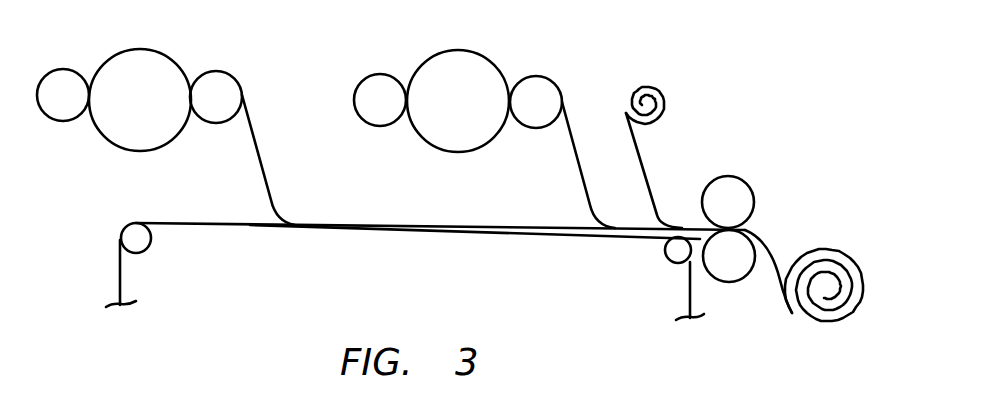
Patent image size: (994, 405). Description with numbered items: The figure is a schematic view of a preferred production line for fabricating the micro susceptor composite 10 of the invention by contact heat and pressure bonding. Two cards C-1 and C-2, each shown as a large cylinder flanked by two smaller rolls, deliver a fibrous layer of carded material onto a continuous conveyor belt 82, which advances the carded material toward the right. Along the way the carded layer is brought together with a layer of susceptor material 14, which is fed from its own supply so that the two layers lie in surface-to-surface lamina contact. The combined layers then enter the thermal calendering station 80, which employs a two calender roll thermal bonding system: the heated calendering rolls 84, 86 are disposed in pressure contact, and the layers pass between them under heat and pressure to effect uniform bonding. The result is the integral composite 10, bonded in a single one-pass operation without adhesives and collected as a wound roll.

The composite 10 is at (811, 246).
The susceptor material layer 14 is at (640, 170).
The thermal calendering station 80 is at (822, 96).
The continuous conveyor belt 82 is at (205, 225).
The heated calendering roll 84 is at (725, 185).
The heated calendering roll 86 is at (725, 272).
The card C-1 is at (166, 119).
The card C-2 is at (484, 123).